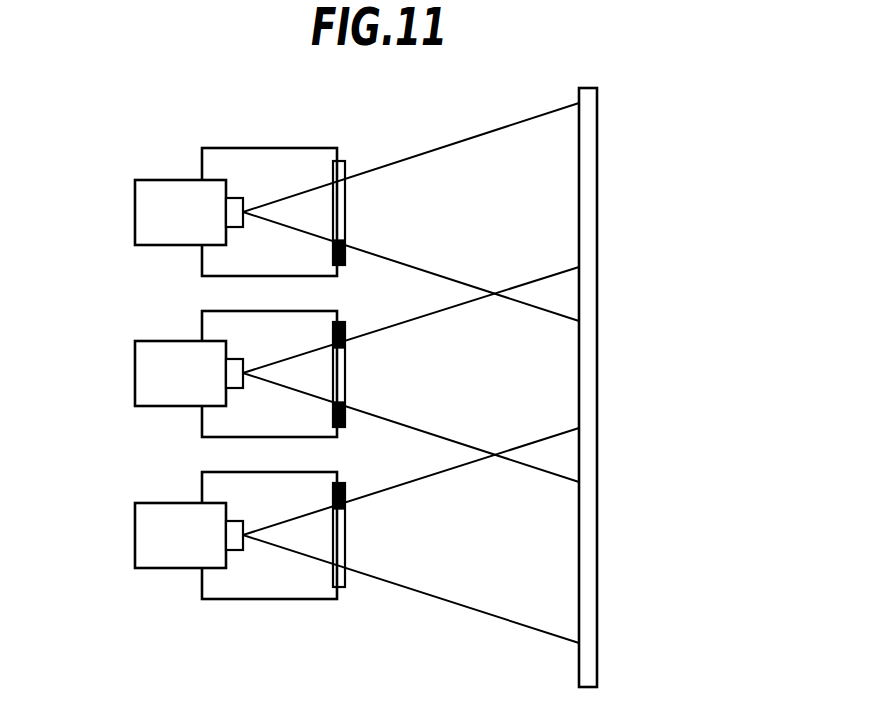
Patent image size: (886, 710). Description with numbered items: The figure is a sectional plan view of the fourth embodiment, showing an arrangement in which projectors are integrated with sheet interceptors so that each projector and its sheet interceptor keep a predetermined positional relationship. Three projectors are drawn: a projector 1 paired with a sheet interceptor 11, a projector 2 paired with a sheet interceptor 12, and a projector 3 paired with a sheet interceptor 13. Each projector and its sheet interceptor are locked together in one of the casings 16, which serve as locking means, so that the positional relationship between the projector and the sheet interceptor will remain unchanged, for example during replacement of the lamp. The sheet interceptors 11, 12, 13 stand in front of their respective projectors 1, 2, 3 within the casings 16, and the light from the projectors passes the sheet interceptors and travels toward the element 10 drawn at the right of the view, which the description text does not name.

The projector 1 is at (145, 210).
The projector 2 is at (145, 371).
The projector 3 is at (145, 531).
The screen 10 is at (597, 145).
The sheet interceptor 11 is at (346, 208).
The sheet interceptor 12 is at (346, 374).
The sheet interceptor 13 is at (346, 537).
The casing 16 is at (224, 148).